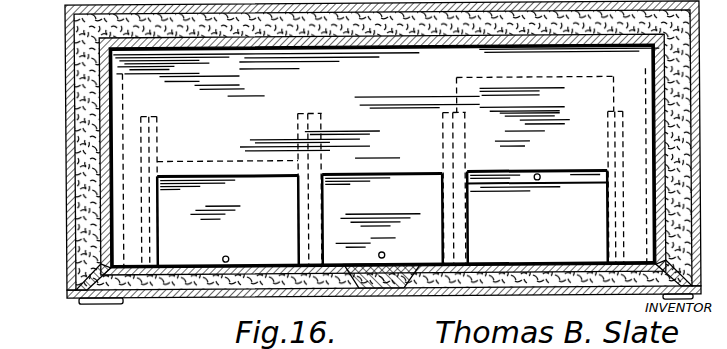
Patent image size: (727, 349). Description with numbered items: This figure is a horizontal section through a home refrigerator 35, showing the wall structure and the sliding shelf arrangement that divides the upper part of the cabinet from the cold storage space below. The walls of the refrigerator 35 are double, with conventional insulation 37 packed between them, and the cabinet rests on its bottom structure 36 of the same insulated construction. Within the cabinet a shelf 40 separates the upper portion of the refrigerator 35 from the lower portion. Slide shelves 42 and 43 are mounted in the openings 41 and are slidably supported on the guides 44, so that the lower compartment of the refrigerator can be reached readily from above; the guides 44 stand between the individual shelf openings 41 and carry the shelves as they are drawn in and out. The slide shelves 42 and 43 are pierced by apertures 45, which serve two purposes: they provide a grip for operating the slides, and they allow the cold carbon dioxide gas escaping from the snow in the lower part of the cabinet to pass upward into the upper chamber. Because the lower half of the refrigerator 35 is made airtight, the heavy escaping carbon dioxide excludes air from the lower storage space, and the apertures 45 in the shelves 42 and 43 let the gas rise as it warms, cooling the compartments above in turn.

The home refrigerator 35 is at (68, 150).
The doors 36 is at (216, 292).
The insulation 37 is at (76, 190).
The shelf 40 is at (386, 157).
The openings 41 is at (217, 173).
The slide shelf 42 is at (566, 194).
The slide shelf 43 is at (382, 219).
The guides 44 is at (458, 233).
The apertures 45 is at (222, 257).